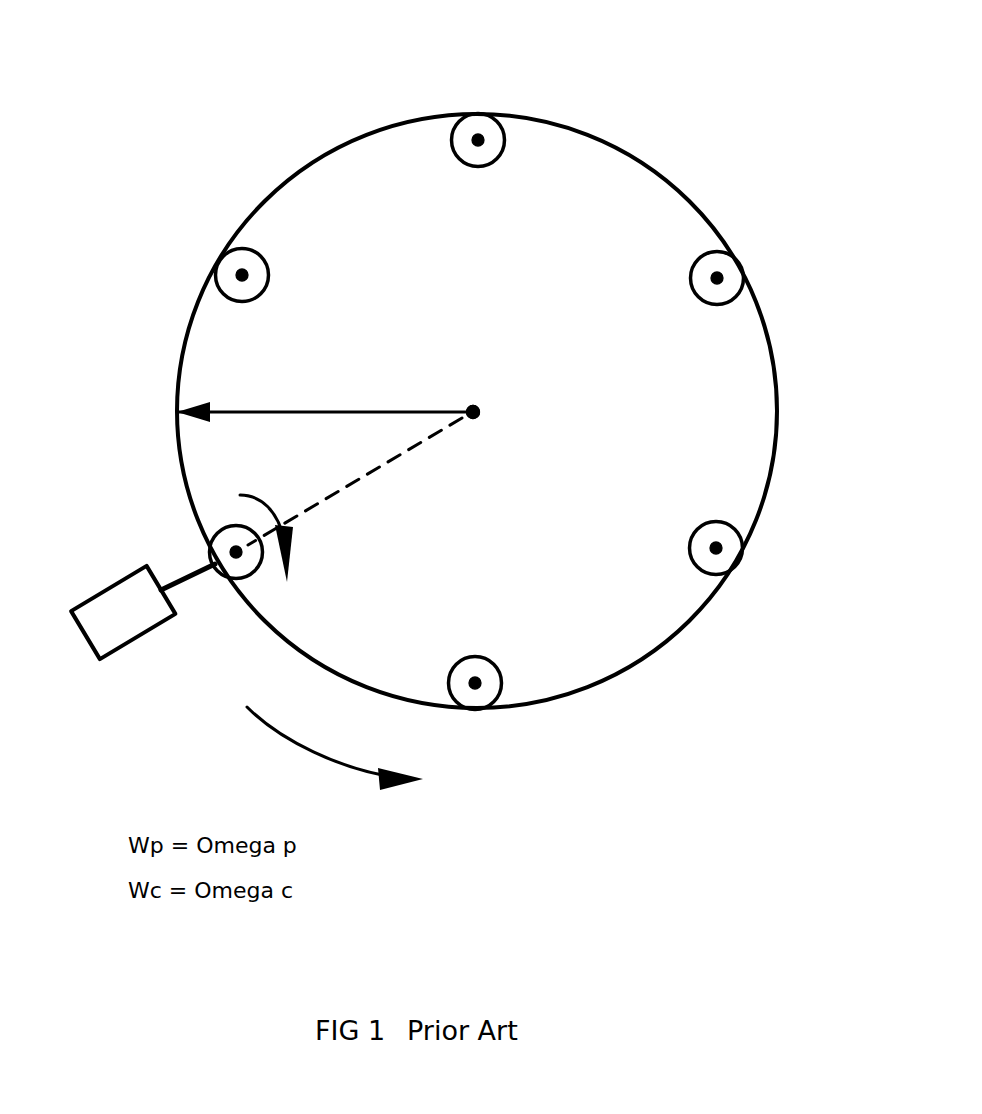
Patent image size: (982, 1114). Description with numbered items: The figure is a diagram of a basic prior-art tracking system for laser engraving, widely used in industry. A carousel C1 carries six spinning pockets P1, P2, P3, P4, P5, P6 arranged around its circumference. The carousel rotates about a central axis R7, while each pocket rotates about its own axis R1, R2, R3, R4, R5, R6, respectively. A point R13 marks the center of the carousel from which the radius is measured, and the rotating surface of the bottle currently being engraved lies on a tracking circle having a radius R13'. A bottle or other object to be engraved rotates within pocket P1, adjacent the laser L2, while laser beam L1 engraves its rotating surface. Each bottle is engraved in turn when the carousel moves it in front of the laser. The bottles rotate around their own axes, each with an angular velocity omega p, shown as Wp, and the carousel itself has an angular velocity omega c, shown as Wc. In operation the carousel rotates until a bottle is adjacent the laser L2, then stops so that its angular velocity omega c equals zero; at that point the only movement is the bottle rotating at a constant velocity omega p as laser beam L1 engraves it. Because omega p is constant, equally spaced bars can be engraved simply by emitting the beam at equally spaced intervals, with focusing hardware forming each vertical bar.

The carousel C1 is at (688, 187).
The pocket P1 is at (220, 537).
The pocket P2 is at (250, 247).
The pocket P3 is at (515, 140).
The pocket P4 is at (733, 308).
The pocket P5 is at (700, 578).
The pocket P6 is at (508, 690).
The pocket rotation axis R1 is at (257, 572).
The pocket rotation axis R2 is at (250, 287).
The pocket rotation axis R3 is at (478, 140).
The pocket rotation axis R4 is at (710, 273).
The pocket rotation axis R5 is at (717, 548).
The pocket rotation axis R6 is at (475, 683).
The carousel axis R7 is at (473, 423).
The center point R13 is at (539, 401).
The tracking circle radius R13' is at (335, 374).
The laser beam L1 is at (185, 590).
The laser L2 is at (105, 587).
The angular velocity omega p Wp is at (274, 528).
The angular velocity omega c Wc is at (335, 754).